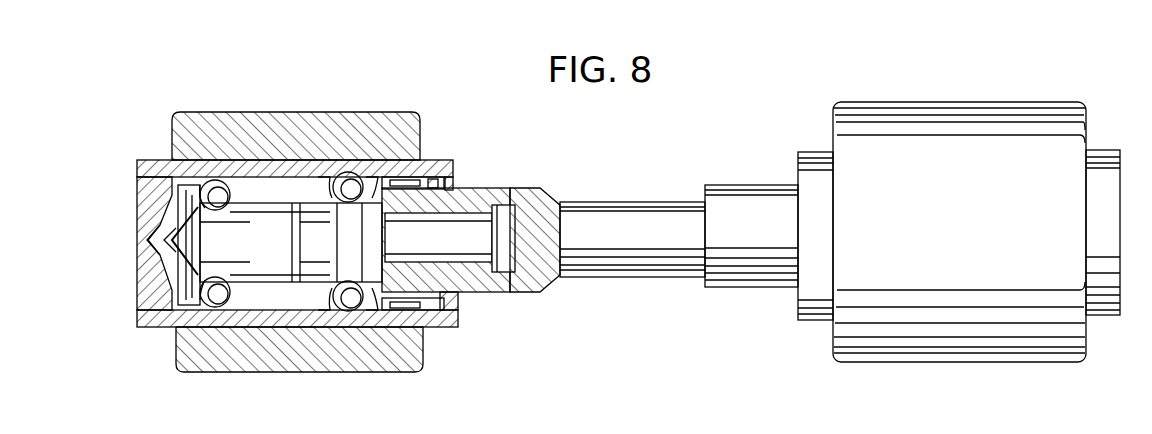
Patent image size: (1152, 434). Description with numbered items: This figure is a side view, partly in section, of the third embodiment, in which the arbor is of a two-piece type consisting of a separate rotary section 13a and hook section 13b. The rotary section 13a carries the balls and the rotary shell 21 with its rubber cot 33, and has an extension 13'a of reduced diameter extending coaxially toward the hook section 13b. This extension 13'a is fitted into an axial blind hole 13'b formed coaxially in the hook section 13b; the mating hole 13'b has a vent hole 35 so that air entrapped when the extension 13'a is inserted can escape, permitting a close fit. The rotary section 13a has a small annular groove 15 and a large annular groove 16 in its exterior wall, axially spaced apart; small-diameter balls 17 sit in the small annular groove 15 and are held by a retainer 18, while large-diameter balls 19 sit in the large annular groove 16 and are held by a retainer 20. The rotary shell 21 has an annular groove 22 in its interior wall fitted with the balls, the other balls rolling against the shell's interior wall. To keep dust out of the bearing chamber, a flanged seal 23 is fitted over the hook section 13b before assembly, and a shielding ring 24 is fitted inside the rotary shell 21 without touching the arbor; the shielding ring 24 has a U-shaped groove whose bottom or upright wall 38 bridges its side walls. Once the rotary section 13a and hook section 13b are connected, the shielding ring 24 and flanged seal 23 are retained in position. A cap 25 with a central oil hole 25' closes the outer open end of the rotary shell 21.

The rotary section 13a is at (285, 205).
The extension of the rotary section 13'a is at (446, 219).
The hook section 13b is at (610, 220).
The axial blind hole 13'b is at (471, 270).
The small annular groove 15 is at (342, 238).
The large annular groove 16 is at (228, 232).
The small-diameter balls 17 is at (348, 176).
The retainer 18 is at (332, 285).
The large-diameter balls 19 is at (215, 182).
The retainer 20 is at (178, 305).
The rotary shell 21 is at (160, 160).
The annular groove of the rotary shell 22 is at (335, 172).
The flanged seal 23 is at (402, 310).
The shielding ring 24 is at (456, 305).
The cap 25 is at (128, 243).
The oil hole 25' is at (126, 243).
The rubber cot 33 is at (277, 345).
The vent hole 35 is at (515, 195).
The bottom or upright wall 38 is at (440, 176).